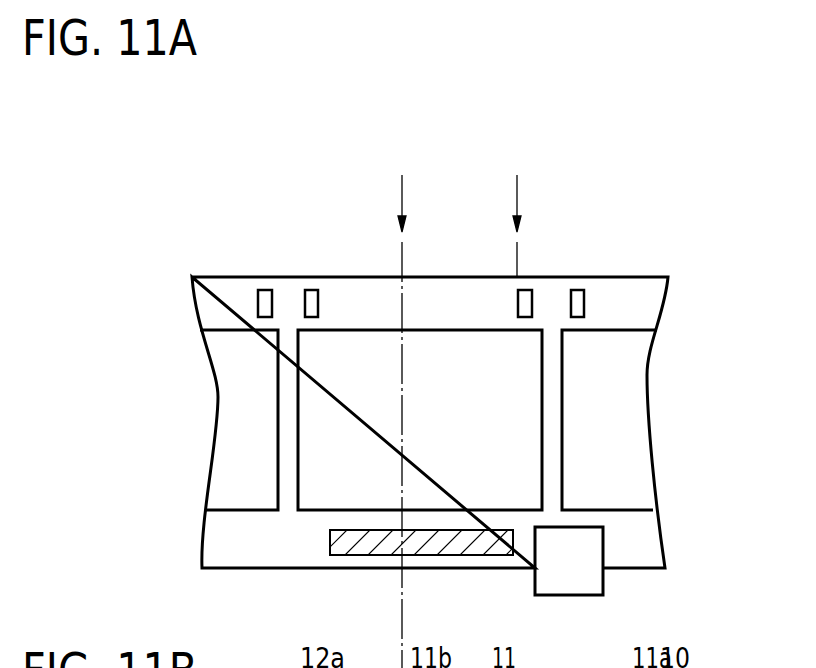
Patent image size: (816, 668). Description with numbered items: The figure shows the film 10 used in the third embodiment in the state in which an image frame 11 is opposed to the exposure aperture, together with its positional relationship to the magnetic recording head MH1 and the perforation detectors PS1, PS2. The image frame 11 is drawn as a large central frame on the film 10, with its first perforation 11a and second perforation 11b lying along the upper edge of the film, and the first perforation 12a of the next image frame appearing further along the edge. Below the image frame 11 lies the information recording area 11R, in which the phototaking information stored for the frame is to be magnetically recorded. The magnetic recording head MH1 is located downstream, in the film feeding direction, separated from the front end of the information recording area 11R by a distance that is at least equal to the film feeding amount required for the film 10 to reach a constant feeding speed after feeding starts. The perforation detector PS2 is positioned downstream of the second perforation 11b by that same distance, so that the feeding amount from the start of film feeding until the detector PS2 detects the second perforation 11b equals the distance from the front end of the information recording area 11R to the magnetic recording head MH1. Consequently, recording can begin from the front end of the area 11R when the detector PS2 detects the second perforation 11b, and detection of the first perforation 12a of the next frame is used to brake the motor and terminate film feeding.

The film 10 is at (620, 277).
The image frame 11 is at (452, 328).
The first perforation 11a is at (527, 298).
The second perforation 11b is at (312, 298).
The first perforation of next image frame 12a is at (263, 298).
The information recording area 11R is at (432, 550).
The magnetic recording head MH1 is at (568, 597).
The perforation detector PS1 is at (521, 212).
The perforation detector PS2 is at (405, 407).